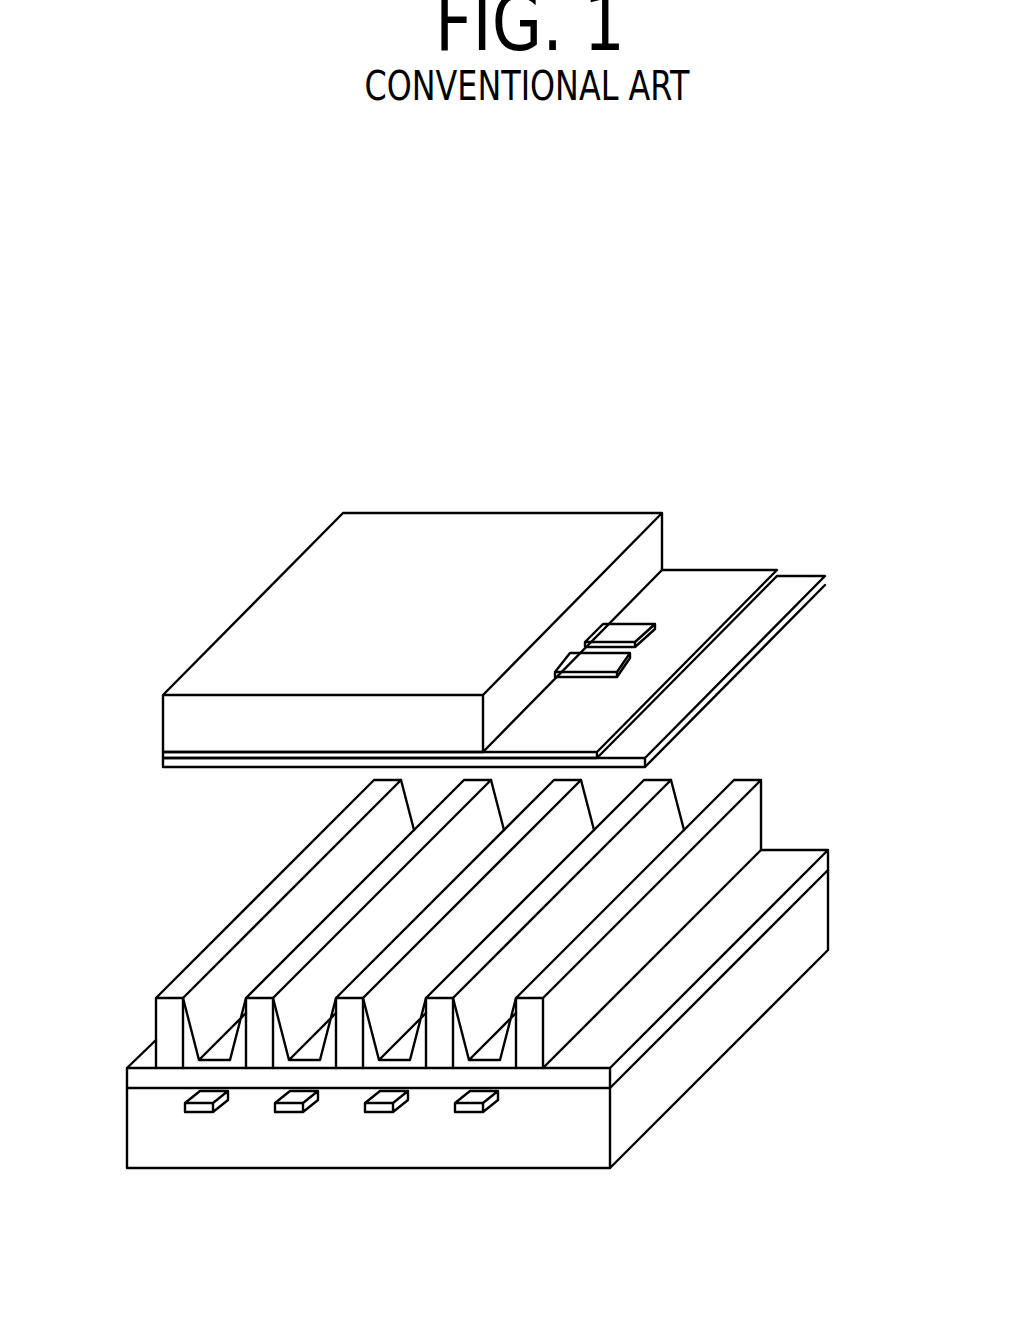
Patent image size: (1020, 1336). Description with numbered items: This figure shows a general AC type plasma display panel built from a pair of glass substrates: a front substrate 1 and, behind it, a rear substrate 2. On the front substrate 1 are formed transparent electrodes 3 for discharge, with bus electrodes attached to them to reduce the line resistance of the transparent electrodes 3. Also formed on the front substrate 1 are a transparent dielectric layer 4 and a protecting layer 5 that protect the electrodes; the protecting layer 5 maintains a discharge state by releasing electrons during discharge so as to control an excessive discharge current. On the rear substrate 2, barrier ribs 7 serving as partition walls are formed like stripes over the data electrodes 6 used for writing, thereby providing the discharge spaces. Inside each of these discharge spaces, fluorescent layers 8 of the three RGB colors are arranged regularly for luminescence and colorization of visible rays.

The front substrate 1 is at (297, 607).
The rear substrate 2 is at (728, 1013).
The transparent electrodes 3 is at (588, 660).
The transparent dielectric layer 4 is at (737, 578).
The protecting layer 5 is at (748, 635).
The data electrodes 6 is at (463, 1112).
The barrier ribs 7 is at (175, 993).
The fluorescent layers 8 is at (414, 1064).